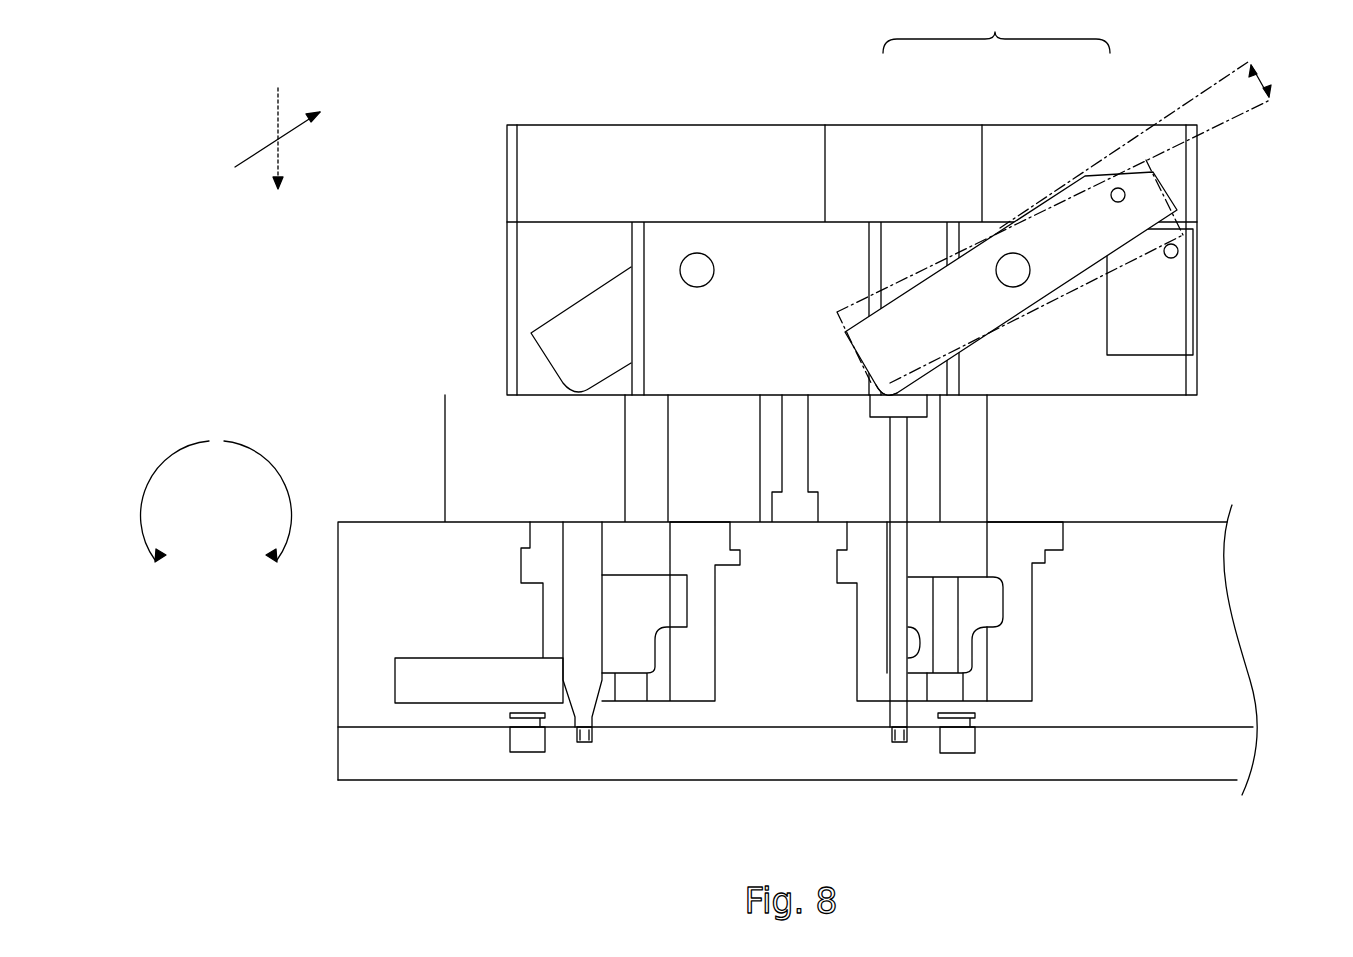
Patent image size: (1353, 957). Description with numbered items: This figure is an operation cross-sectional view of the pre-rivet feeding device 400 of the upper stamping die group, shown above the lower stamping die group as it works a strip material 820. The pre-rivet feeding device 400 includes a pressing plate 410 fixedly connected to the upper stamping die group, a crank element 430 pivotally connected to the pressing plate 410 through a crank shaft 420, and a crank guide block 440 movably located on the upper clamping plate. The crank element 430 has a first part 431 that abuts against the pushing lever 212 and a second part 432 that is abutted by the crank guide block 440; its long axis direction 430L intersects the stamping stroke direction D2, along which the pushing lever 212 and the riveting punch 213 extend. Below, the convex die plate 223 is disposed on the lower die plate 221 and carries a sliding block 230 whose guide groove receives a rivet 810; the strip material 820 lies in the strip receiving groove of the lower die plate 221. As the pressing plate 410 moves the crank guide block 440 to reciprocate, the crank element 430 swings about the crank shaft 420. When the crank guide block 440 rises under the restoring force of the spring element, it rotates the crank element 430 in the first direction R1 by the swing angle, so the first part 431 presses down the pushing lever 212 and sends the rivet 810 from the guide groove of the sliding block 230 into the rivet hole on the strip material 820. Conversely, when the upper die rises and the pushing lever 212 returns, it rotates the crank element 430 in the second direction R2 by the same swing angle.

The pre-rivet feeding device 400 is at (996, 27).
The pressing plate 410 is at (993, 133).
The crank shaft 420 is at (1015, 268).
The crank element 430 is at (928, 279).
The first part 431 is at (917, 373).
The second part 432 is at (1162, 172).
The crank guide block 440 is at (1145, 270).
The pushing lever 212 is at (900, 547).
The riveting punch 213 is at (593, 615).
The lower die plate 221 is at (1245, 753).
The convex die plate 223 is at (357, 622).
The sliding block 230 is at (977, 605).
The rivet 810 is at (582, 745).
The strip material 820 is at (1227, 727).
The long axis direction 430L is at (251, 157).
The stamping stroke direction D2 is at (278, 154).
The first direction R1 is at (175, 515).
The second direction R2 is at (260, 515).